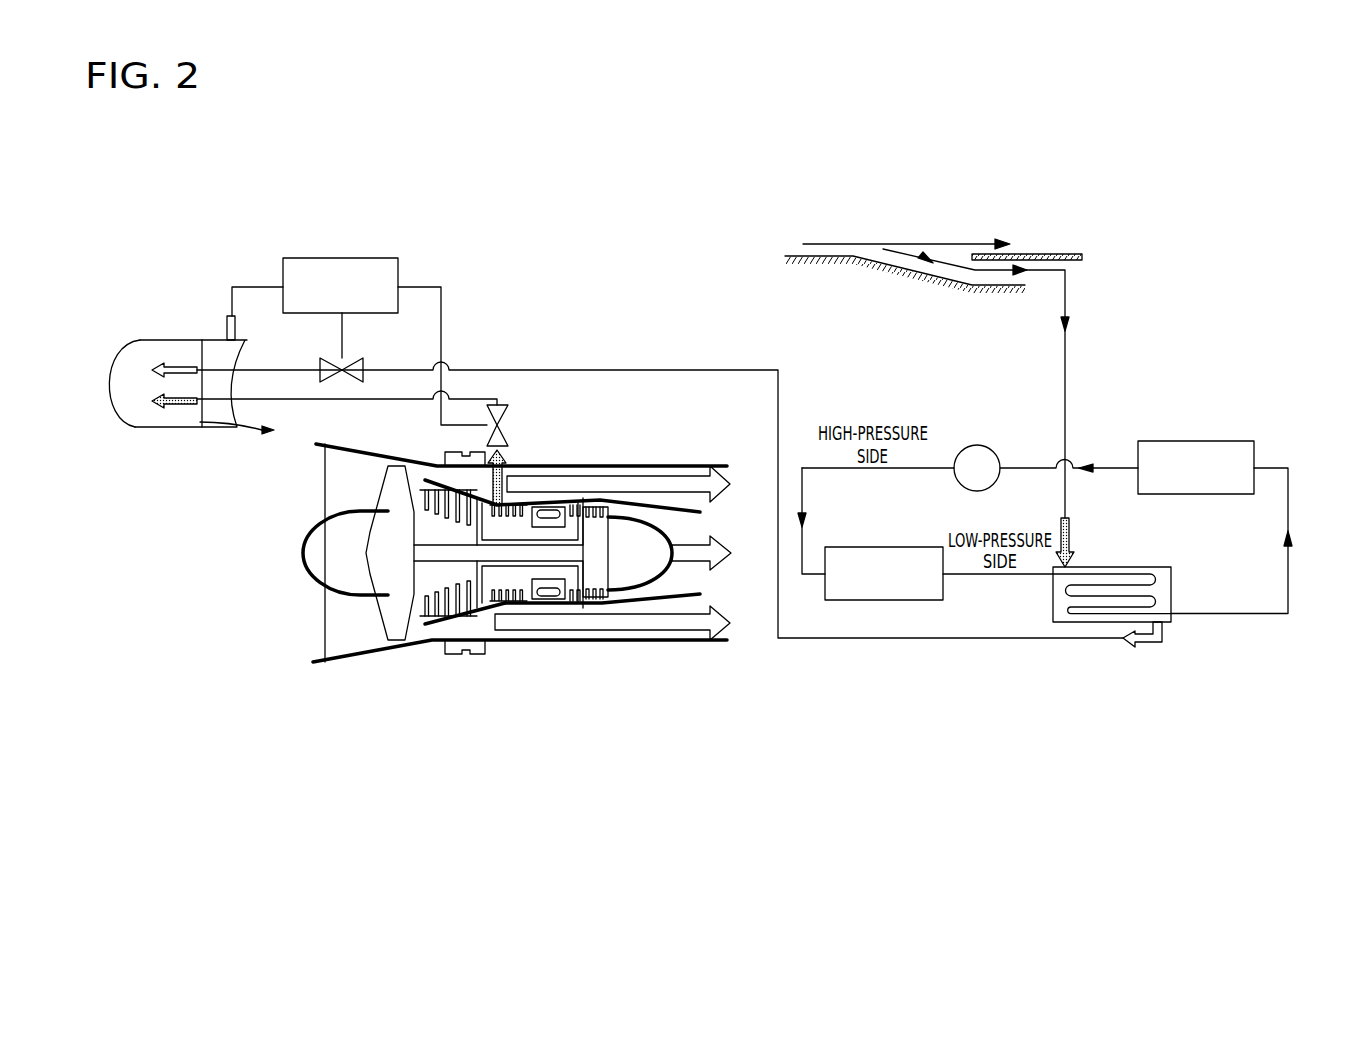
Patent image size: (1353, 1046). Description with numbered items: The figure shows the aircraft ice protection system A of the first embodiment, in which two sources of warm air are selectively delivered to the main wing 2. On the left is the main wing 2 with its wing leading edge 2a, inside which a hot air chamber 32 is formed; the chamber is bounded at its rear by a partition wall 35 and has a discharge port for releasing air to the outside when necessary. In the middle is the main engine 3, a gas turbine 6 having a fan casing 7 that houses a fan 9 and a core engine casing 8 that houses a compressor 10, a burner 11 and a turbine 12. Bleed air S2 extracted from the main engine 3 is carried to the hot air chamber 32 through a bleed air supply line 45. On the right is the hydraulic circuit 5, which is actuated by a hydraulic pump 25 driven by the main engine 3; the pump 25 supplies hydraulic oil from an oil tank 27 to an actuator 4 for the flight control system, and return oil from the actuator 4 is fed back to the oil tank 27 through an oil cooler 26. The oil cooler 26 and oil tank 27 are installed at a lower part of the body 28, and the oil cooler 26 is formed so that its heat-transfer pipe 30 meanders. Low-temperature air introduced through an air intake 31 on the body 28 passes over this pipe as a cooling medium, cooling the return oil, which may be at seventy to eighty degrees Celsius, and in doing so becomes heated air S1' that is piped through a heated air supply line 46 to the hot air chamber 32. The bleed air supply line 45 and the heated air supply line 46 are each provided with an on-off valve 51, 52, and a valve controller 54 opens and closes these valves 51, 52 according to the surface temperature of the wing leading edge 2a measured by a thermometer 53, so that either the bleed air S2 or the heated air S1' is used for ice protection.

The main wing 2 is at (165, 347).
The wing leading edge 2a is at (135, 360).
The main engine 3 is at (520, 590).
The actuator 4 is at (878, 547).
The hydraulic circuit 5 is at (1260, 412).
The gas turbine 6 is at (580, 650).
The fan casing 7 is at (407, 467).
The core engine casing 8 is at (637, 502).
The fan 9 is at (362, 624).
The compressor 10 is at (463, 616).
The burner 11 is at (553, 486).
The turbine 12 is at (622, 616).
The hydraulic pump 25 is at (977, 445).
The oil cooler 26 is at (1120, 567).
The oil tank 27 is at (1200, 441).
The body 28 is at (792, 255).
The heat-transfer pipe 30 is at (1100, 622).
The air intake 31 is at (962, 256).
The hot air chamber 32 is at (142, 403).
The partition wall 35 is at (203, 413).
The bleed air supply line 45 is at (385, 399).
The heated air supply line 46 is at (713, 370).
The on-off valve 51 is at (508, 415).
The on-off valve 52 is at (320, 362).
The thermometer 53 is at (229, 315).
The valve controller 54 is at (342, 258).
The aircraft ice protection system A is at (1175, 196).
The heated air S1' is at (179, 323).
The bleed air S2 is at (180, 408).